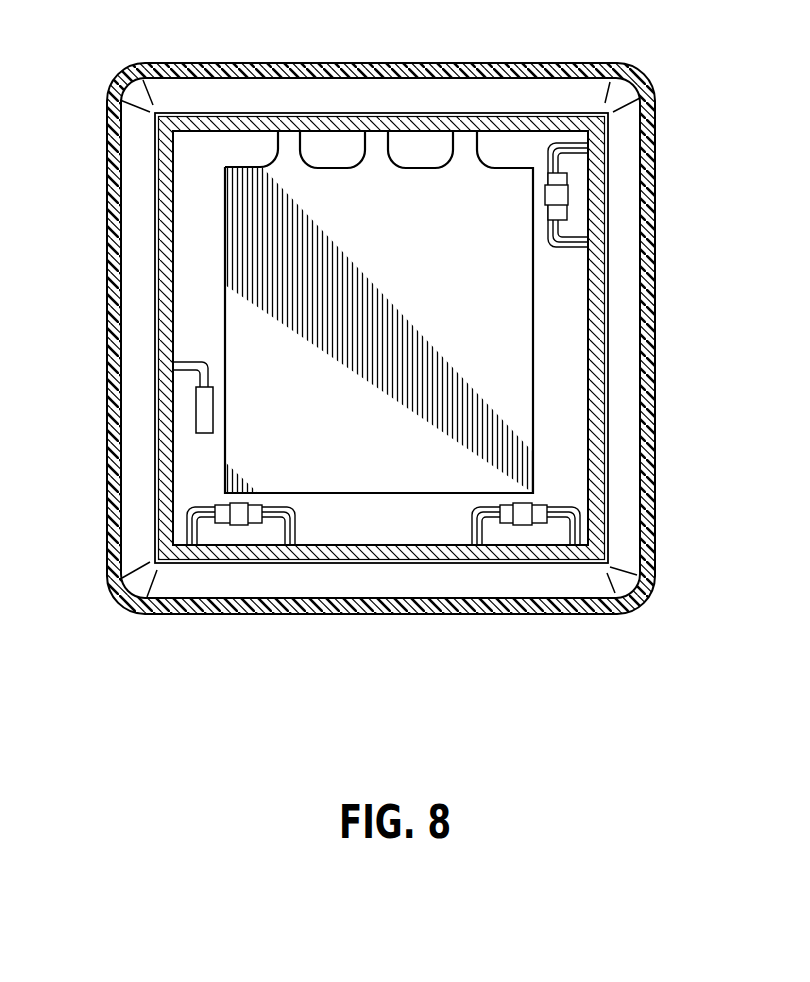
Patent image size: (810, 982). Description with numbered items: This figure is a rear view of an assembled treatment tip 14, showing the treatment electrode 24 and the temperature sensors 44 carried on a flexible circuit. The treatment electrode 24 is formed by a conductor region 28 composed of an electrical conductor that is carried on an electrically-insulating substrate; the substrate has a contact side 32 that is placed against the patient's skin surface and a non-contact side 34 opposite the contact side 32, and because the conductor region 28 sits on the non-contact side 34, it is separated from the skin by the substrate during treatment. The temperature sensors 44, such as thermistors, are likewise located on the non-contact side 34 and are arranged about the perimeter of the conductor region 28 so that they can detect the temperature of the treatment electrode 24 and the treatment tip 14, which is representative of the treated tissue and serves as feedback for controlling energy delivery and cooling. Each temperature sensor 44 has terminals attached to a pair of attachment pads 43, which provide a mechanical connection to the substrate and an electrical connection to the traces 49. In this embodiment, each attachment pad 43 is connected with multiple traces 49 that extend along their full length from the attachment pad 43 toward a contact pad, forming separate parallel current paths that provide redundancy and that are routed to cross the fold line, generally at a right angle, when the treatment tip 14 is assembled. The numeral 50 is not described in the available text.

The treatment tip 14 is at (662, 320).
The treatment electrode 24 is at (218, 456).
The conductor region 28 is at (575, 425).
The contact side 32 is at (256, 153).
The non-contact side 34 is at (337, 153).
The attachment pad 43 is at (548, 178).
The temperature sensor 44 is at (567, 197).
The trace 49 is at (566, 142).
The frame corner 50 is at (595, 148).